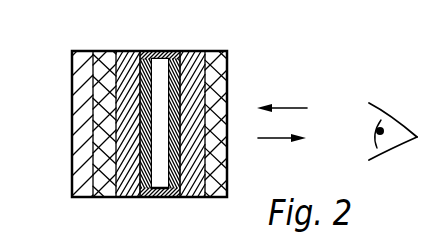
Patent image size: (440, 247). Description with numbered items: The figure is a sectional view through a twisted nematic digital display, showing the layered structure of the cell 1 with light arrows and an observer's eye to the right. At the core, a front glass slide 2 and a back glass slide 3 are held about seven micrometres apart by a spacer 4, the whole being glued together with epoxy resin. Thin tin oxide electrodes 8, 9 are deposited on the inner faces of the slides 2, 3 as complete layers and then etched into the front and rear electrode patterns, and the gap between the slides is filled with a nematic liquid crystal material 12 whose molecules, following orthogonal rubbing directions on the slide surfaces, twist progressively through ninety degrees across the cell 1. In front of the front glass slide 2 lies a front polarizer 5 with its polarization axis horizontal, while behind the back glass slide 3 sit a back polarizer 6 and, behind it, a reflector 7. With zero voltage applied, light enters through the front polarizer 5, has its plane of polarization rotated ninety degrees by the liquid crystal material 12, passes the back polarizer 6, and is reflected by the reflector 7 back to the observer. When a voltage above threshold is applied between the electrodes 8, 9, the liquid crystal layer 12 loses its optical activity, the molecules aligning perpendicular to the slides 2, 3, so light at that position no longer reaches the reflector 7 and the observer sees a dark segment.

The cell 1 is at (62, 178).
The front glass slide 2 is at (192, 56).
The back glass slide 3 is at (128, 58).
The spacer 4 is at (175, 198).
The front polarizer 5 is at (219, 84).
The back polarizer 6 is at (107, 93).
The reflector 7 is at (80, 123).
The front electrode 8 is at (176, 56).
The rear electrode 9 is at (148, 55).
The nematic liquid crystal material 12 is at (153, 190).